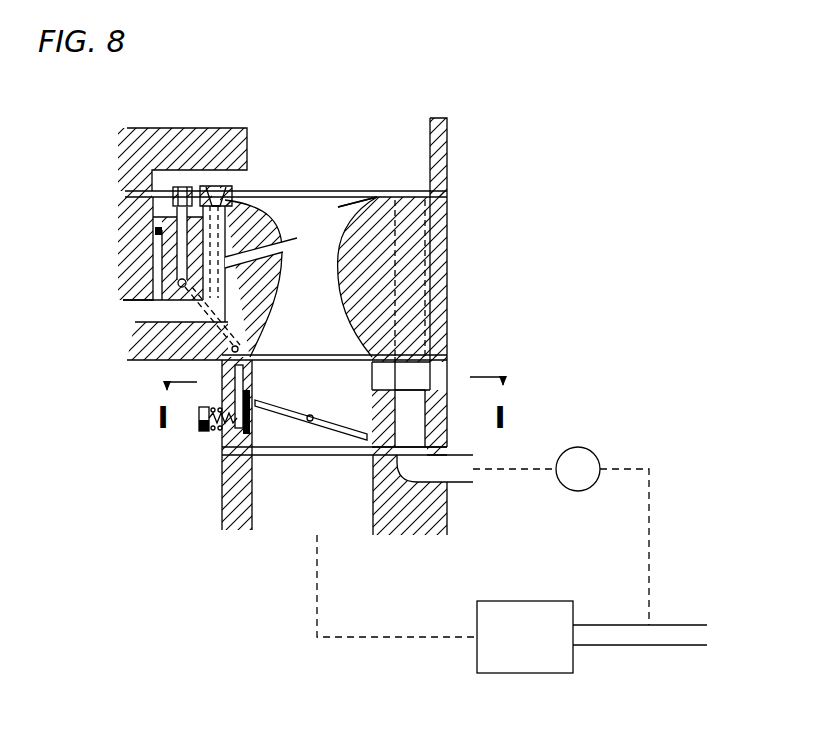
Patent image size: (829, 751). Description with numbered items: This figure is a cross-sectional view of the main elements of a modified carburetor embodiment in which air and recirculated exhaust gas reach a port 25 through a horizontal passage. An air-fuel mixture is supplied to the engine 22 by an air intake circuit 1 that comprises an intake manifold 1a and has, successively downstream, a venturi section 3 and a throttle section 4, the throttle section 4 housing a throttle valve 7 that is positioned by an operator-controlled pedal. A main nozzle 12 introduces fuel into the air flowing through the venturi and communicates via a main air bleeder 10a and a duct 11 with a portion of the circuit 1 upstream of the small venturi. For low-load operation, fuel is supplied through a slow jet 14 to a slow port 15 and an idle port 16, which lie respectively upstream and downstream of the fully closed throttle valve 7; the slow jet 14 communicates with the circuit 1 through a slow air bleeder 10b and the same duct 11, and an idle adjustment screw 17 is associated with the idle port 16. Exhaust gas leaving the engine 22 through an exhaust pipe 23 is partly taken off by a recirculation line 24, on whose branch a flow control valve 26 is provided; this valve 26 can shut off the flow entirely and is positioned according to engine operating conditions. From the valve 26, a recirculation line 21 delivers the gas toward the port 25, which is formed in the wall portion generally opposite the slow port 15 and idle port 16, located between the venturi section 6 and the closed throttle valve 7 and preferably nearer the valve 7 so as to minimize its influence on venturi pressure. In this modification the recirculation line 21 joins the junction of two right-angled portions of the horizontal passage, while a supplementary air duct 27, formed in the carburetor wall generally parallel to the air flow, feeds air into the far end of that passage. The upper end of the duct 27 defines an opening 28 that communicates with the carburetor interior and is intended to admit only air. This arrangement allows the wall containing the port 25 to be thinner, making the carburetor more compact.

The air intake circuit 1 is at (440, 148).
The intake manifold 1a is at (230, 505).
The venturi section 3 is at (433, 207).
The throttle section 4 is at (372, 440).
The venturi section 6 is at (340, 237).
The throttle valve 7 is at (257, 400).
The main air bleeder 10a is at (220, 187).
The slow air bleeder 10b is at (180, 187).
The duct 11 is at (207, 182).
The main nozzle 12 is at (295, 238).
The slow jet 14 is at (155, 231).
The slow port 15 is at (247, 397).
The idle port 16 is at (252, 423).
The idle adjustment screw 17 is at (203, 425).
The recirculation line 21 is at (413, 423).
The engine 22 is at (538, 601).
The exhaust pipe 23 is at (629, 647).
The recirculation line 24 is at (649, 513).
The port 25 is at (378, 375).
The flow control valve 26 is at (595, 452).
The supplementary air duct 27 is at (410, 247).
The opening 28 is at (393, 197).